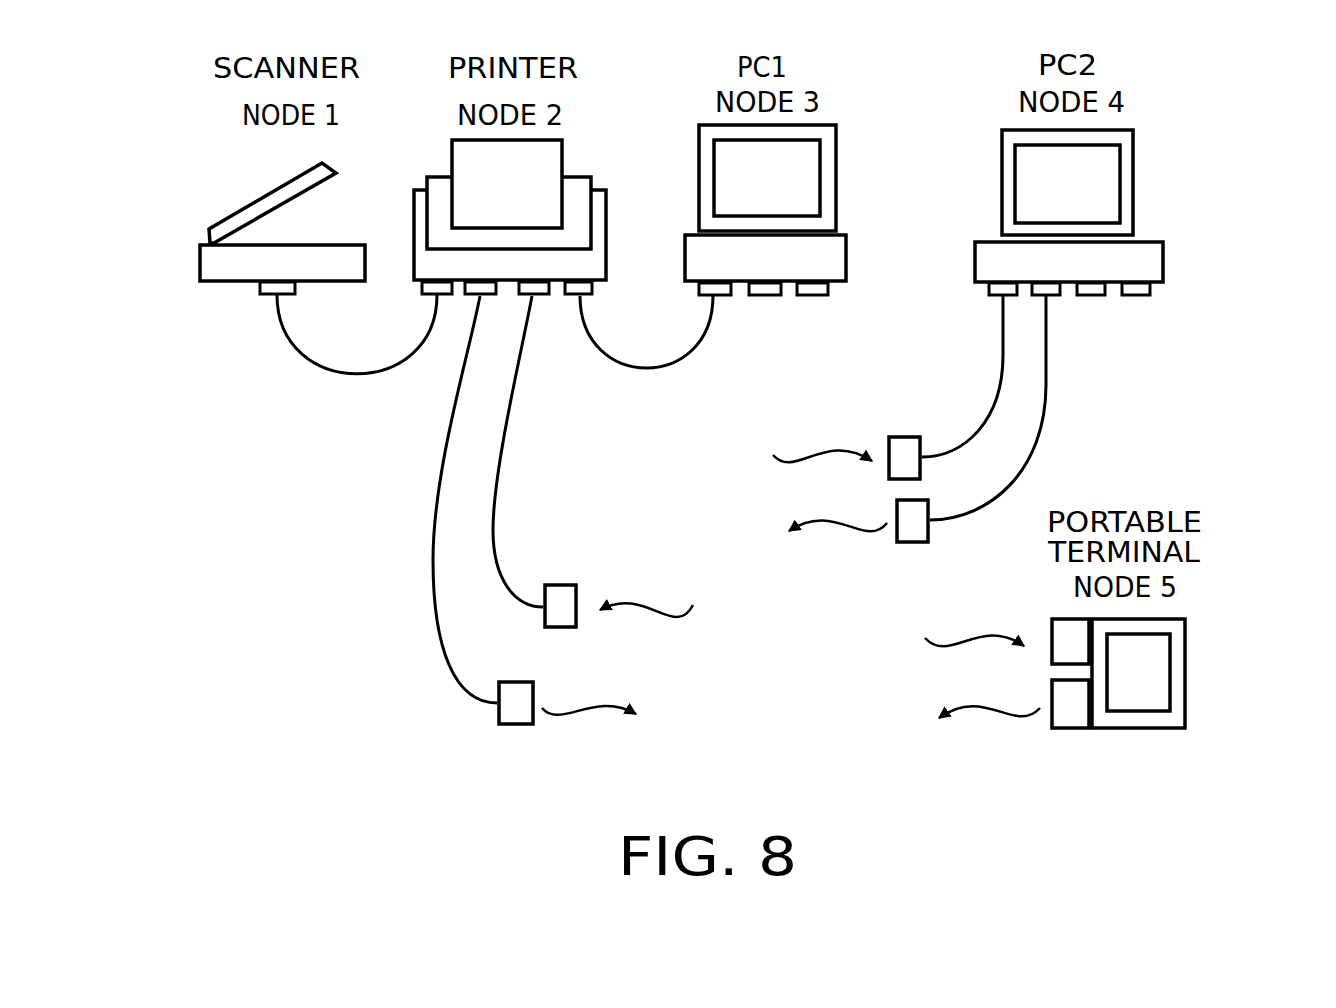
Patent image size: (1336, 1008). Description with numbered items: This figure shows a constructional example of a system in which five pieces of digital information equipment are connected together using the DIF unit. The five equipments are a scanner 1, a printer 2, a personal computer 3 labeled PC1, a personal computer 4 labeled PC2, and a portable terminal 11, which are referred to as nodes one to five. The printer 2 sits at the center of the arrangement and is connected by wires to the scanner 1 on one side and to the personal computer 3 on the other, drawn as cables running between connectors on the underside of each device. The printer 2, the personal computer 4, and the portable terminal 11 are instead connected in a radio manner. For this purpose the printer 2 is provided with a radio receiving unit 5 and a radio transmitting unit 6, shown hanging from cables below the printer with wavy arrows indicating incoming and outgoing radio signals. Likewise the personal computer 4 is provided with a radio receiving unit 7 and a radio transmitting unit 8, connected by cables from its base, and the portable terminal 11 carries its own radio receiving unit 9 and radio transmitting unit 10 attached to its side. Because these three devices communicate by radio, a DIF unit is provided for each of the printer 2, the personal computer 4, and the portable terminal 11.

The scanner 1 is at (250, 203).
The printer 2 is at (563, 162).
The personal computer 3 is at (838, 163).
The personal computer 4 is at (1135, 168).
The radio receiving unit 5 is at (565, 583).
The radio transmitting unit 6 is at (525, 725).
The radio receiving unit 7 is at (895, 436).
The radio transmitting unit 8 is at (906, 543).
The radio receiving unit 9 is at (1062, 617).
The radio transmitting unit 10 is at (1065, 730).
The portable terminal 11 is at (1187, 660).